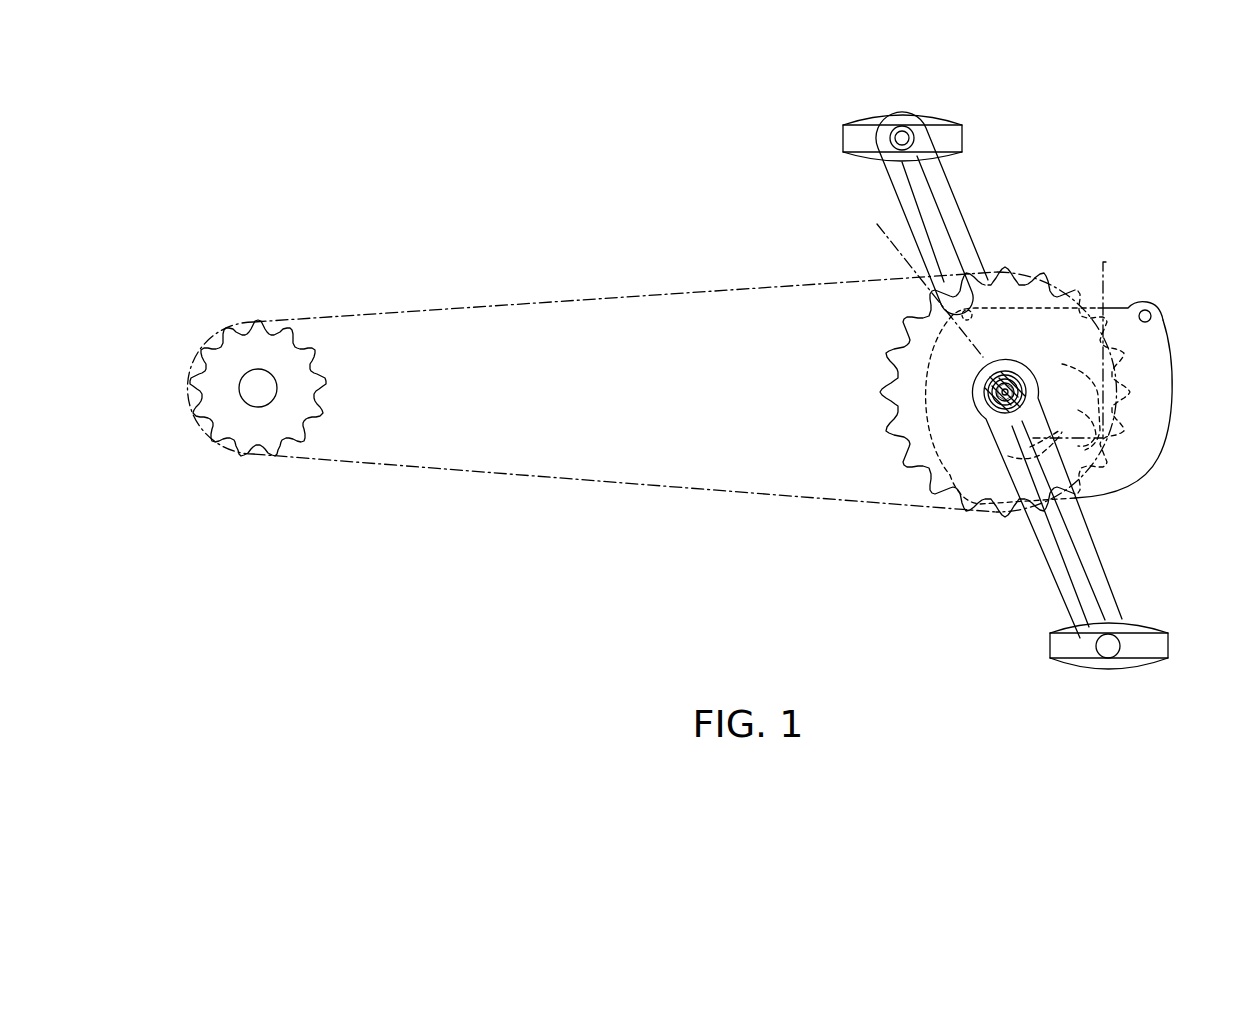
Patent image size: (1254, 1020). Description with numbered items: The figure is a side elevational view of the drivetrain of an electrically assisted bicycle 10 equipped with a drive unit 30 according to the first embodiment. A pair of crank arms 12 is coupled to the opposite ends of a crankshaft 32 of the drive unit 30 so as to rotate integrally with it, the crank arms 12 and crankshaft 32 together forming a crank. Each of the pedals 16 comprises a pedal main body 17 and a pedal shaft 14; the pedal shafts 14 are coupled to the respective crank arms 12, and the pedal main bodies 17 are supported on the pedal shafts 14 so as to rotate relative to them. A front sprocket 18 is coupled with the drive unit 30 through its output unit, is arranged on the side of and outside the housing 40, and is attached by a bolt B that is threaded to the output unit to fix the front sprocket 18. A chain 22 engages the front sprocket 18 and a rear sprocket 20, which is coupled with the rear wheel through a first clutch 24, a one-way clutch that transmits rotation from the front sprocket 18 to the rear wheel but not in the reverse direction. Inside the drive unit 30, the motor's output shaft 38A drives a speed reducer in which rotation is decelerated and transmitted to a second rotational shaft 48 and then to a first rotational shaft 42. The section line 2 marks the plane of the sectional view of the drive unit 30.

The electrically assisted bicycle 10 is at (1122, 182).
The section line 2 is at (868, 227).
The crank arms 12 is at (962, 211).
The pedal shaft 14 is at (905, 126).
The pedals 16 is at (965, 141).
The pedal main body 17 is at (937, 128).
The front sprocket 18 is at (960, 507).
The rear sprocket 20 is at (283, 458).
The chain 22 is at (628, 492).
The first clutch 24 is at (290, 386).
The drive unit 30 is at (1171, 398).
The crankshaft 32 is at (1008, 360).
The output shaft 38A is at (1097, 388).
The housing 40 is at (1162, 360).
The first rotational shaft 42 is at (1012, 456).
The second rotational shaft 48 is at (1095, 432).
The bolt B is at (990, 412).